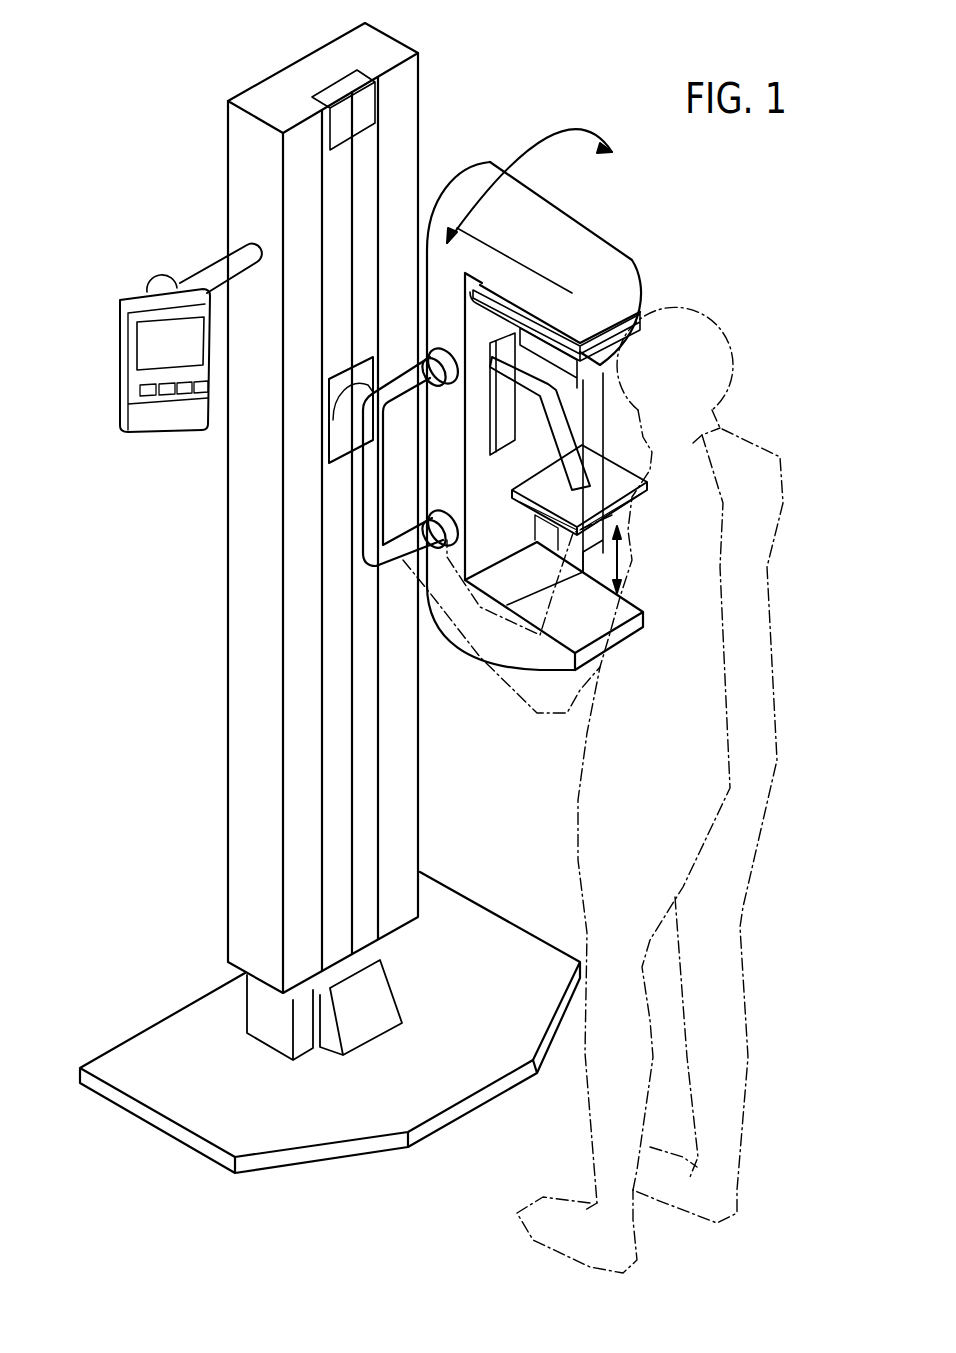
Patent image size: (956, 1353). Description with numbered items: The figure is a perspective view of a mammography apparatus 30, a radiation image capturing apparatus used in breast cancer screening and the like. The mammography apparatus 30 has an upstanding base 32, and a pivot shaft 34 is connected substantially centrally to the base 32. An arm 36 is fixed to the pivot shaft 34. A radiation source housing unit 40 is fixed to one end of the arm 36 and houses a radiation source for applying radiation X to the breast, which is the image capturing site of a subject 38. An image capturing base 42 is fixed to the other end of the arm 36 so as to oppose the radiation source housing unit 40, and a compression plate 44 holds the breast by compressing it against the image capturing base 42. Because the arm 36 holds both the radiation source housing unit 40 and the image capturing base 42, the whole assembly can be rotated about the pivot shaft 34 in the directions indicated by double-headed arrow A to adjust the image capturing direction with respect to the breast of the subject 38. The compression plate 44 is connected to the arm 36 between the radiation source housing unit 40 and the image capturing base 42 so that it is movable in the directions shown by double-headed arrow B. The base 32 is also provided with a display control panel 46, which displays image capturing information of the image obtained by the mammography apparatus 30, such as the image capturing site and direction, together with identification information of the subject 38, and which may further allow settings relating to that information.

The mammography apparatus 30 is at (772, 204).
The base 32 is at (243, 580).
The pivot shaft 34 is at (400, 433).
The arm 36 is at (440, 290).
The subject 38 is at (752, 709).
The radiation source housing unit 40 is at (624, 292).
The image capturing base 42 is at (568, 622).
The compression plate 44 is at (613, 484).
The display control panel 46 is at (147, 346).